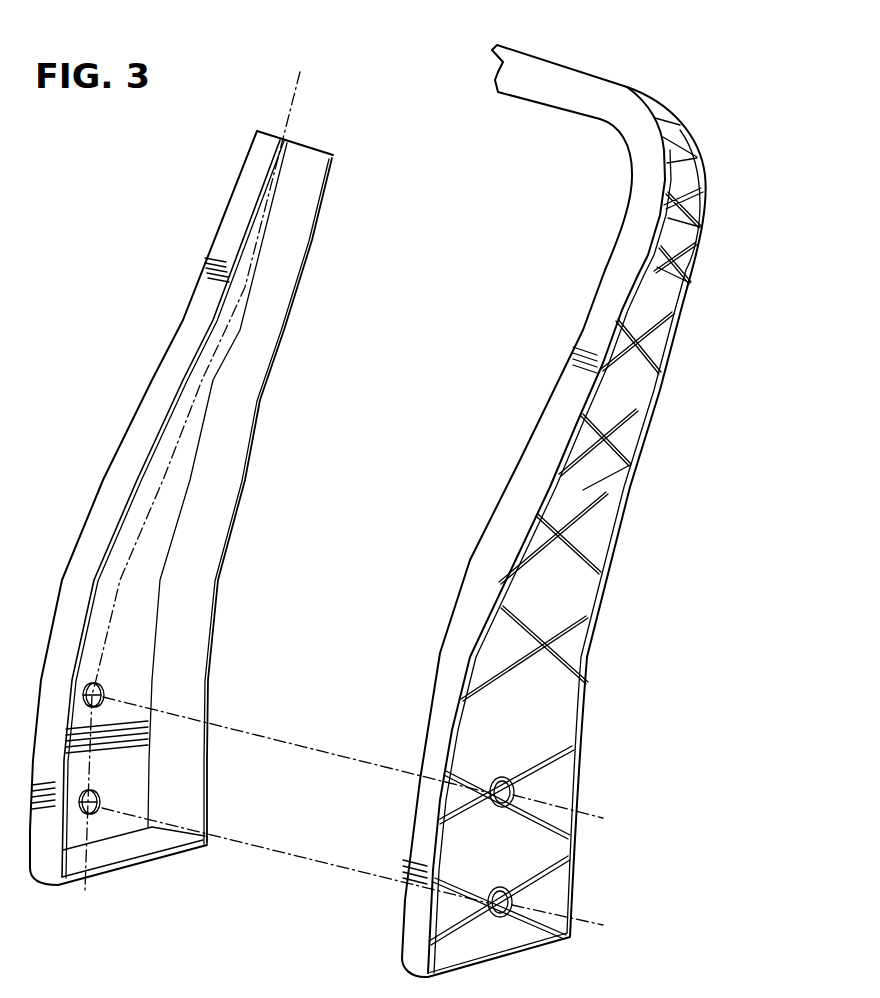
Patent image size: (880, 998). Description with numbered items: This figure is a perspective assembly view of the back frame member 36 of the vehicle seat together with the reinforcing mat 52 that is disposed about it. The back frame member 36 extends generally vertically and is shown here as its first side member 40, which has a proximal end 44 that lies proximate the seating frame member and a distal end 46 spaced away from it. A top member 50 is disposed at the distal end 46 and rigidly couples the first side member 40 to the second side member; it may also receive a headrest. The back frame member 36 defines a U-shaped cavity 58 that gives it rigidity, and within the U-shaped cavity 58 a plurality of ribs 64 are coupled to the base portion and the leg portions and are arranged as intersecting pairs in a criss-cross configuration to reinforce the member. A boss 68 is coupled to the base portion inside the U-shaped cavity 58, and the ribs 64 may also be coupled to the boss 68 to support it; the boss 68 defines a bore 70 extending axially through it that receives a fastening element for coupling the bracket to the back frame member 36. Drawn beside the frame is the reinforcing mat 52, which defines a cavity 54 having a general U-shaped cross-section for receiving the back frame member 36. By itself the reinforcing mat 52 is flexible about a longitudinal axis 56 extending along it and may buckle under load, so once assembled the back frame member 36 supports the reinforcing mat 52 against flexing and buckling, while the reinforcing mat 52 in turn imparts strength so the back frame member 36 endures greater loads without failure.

The back frame member 36 is at (628, 72).
The first side member 40 is at (562, 530).
The proximal end 44 is at (610, 917).
The distal end 46 is at (710, 167).
The top member 50 is at (542, 72).
The reinforcing mat 52 is at (108, 493).
The cavity 54 is at (175, 552).
The longitudinal axis 56 is at (302, 97).
The U-shaped cavity 58 is at (560, 697).
The ribs 64 is at (617, 420).
The boss 68 is at (460, 788).
The bore 70 is at (509, 793).